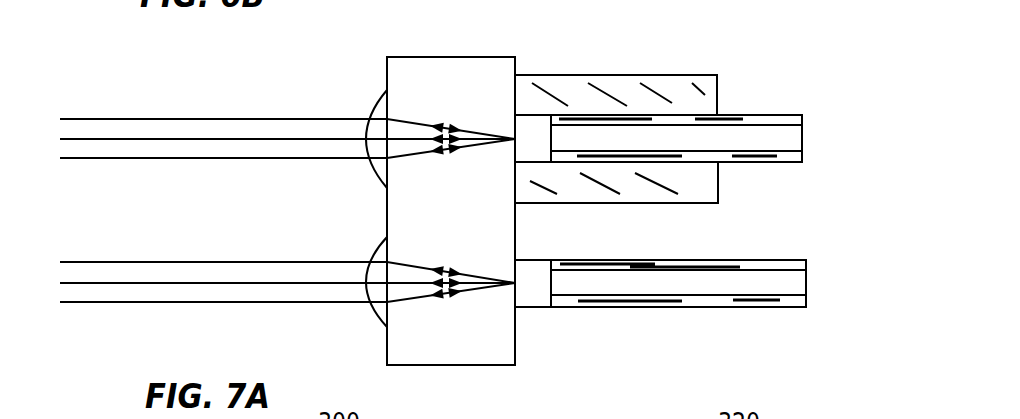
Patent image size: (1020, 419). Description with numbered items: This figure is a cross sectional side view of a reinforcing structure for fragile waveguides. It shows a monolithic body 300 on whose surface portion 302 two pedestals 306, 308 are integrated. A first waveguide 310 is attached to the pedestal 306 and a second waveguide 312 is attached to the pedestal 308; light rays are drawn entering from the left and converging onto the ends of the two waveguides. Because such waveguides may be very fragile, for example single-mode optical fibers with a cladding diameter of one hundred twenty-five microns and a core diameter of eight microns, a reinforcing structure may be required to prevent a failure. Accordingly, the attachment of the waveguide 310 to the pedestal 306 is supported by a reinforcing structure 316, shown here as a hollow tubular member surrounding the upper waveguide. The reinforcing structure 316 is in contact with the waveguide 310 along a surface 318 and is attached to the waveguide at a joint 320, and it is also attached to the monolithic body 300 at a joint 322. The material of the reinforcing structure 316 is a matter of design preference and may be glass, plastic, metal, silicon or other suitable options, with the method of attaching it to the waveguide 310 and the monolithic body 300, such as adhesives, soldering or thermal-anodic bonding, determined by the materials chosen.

The monolithic body 300 is at (433, 78).
The surface portion 302 is at (515, 345).
The pedestal 306 is at (535, 120).
The pedestal 308 is at (538, 300).
The waveguide 310 is at (788, 143).
The waveguide 312 is at (788, 286).
The reinforcing structure 316 is at (705, 82).
The surface 318 is at (633, 115).
The joint 320 is at (722, 114).
The joint 322 is at (517, 74).